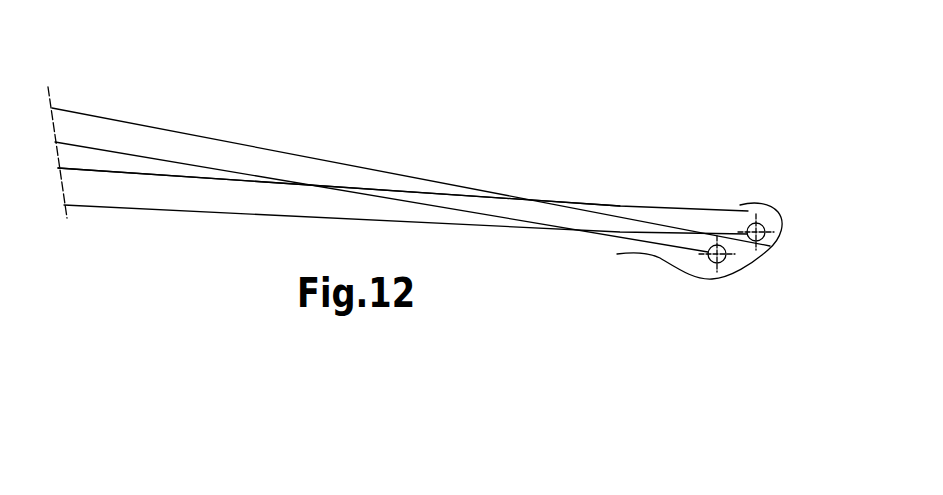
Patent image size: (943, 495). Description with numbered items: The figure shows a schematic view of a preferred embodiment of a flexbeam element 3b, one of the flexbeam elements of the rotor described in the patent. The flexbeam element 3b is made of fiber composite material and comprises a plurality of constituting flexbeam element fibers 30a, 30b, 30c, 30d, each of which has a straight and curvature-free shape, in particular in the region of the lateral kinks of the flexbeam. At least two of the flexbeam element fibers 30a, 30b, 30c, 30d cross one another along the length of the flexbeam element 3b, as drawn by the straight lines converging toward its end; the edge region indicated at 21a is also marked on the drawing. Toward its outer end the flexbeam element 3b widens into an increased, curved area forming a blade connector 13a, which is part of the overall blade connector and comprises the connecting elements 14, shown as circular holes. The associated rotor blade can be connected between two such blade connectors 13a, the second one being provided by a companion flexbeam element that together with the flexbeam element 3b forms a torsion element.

The flexbeam element fiber 30a is at (171, 153).
The flexbeam element fiber 30b is at (210, 202).
The flexbeam element fiber 30c is at (257, 135).
The flexbeam element fiber 30d is at (102, 160).
The edge of arm 21a is at (527, 196).
The flexbeam element 3b is at (617, 193).
The connecting elements 14 is at (707, 232).
The blade connector 13a is at (707, 277).